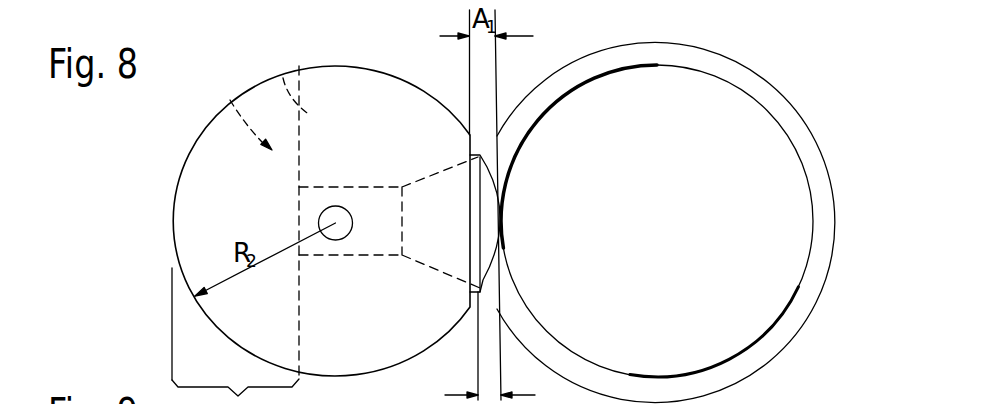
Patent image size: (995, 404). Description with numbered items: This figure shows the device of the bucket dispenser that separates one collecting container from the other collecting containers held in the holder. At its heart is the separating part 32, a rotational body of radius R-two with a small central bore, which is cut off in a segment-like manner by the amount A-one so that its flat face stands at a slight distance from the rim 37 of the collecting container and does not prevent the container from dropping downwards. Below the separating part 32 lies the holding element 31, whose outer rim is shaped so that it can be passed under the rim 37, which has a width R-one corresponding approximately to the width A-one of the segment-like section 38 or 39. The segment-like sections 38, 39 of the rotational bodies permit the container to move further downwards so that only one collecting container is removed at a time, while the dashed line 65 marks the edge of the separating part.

The holding element 31 is at (478, 226).
The separating part 32 is at (381, 333).
The rim 37 is at (735, 75).
The segment-like section 38 is at (483, 361).
The segment-like section 39 is at (230, 100).
The separating part 65 is at (281, 75).